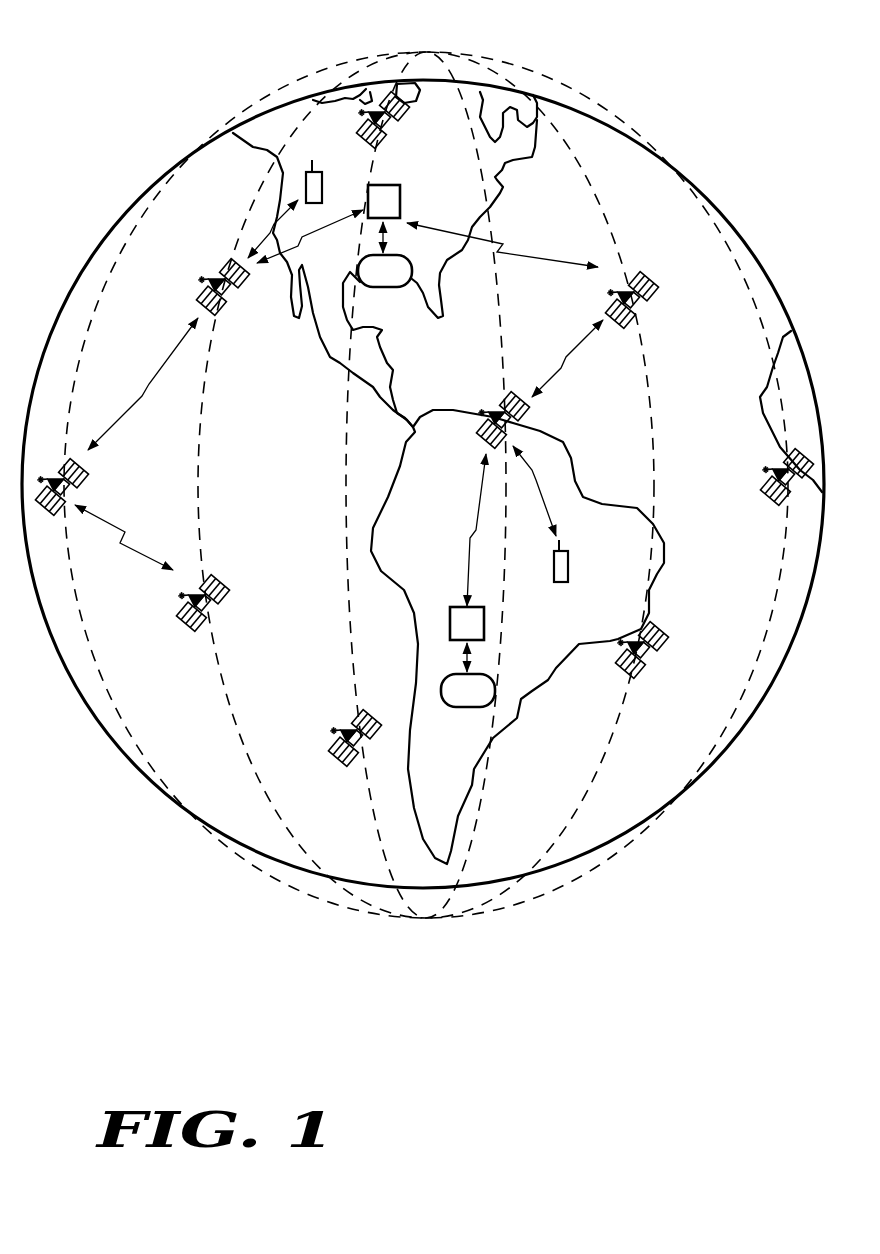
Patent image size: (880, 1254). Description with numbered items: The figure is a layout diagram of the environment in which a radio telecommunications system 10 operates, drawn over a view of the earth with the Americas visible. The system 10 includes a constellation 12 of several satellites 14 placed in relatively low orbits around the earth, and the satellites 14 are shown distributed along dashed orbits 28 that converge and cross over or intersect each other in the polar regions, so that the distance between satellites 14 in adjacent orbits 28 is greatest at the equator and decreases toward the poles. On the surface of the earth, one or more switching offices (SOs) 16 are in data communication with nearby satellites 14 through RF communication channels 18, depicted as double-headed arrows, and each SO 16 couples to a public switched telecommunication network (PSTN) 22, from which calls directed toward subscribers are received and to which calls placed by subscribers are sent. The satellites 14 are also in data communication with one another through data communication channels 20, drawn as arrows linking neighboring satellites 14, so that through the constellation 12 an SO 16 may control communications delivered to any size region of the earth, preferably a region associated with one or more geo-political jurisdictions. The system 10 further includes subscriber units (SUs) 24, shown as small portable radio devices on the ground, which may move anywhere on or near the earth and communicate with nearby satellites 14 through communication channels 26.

The radio telecommunications system 10 is at (423, 1036).
The constellation 12 is at (430, 50).
The satellites 14 is at (230, 297).
The switching office 16 is at (402, 195).
The RF communication channels 18 is at (305, 240).
The data communication channels 20 is at (563, 362).
The public switched telecommunication network 22 is at (384, 288).
The subscriber unit 24 is at (318, 168).
The communication channels 26 is at (270, 233).
The orbits 28 is at (497, 318).